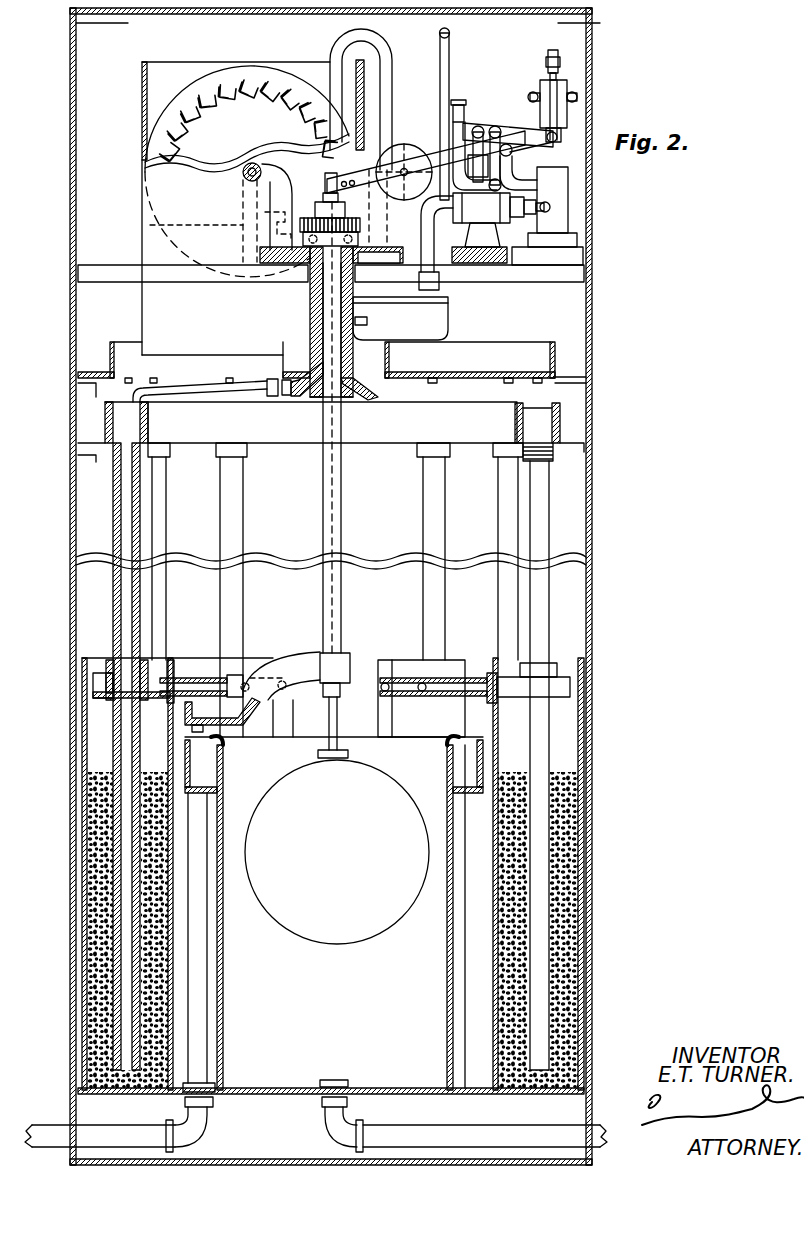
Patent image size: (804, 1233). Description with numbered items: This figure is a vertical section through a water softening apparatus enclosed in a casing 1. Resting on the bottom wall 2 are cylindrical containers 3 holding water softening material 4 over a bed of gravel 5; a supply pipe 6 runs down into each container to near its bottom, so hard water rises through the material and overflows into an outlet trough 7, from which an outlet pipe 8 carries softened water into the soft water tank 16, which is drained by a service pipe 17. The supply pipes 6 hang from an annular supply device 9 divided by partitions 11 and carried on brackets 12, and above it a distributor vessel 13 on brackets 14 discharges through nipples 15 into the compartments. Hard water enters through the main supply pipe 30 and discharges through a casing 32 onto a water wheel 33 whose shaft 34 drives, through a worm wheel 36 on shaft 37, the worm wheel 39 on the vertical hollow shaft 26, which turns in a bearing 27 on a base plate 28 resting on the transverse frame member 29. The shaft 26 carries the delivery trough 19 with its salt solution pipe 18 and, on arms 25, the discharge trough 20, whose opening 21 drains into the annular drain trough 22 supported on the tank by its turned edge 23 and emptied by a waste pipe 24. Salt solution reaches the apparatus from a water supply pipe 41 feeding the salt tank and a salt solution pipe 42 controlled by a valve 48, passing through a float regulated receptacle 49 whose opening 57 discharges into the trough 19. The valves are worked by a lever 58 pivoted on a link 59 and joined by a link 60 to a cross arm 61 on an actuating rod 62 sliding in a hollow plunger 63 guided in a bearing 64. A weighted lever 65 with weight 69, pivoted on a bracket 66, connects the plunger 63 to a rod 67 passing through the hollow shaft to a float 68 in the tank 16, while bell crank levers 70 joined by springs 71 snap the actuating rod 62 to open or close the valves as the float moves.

The casing 1 is at (70, 183).
The bottom wall 2 is at (292, 1094).
The container 3 is at (493, 922).
The water softening material 4 is at (76, 283).
The gravel 5 is at (76, 378).
The supply pipe 6 is at (152, 520).
The outlet trough 7 is at (93, 688).
The outlet pipe 8 is at (187, 678).
The annular supply device 9 is at (562, 425).
The partition 11 is at (520, 425).
The bracket 12 is at (99, 446).
The distributor vessel 13 is at (508, 350).
The bracket 14 is at (561, 372).
The nipple 15 is at (505, 377).
The soft water tank 16 is at (448, 964).
The service pipe 17 is at (382, 1137).
The salt solution pipe 18 is at (190, 395).
The delivery trough 19 is at (370, 385).
The discharge trough 20 is at (245, 728).
The discharge opening 21 is at (195, 728).
The drain trough 22 is at (200, 768).
The turned edge 23 is at (430, 742).
The waste pipe 24 is at (198, 955).
The arm 25 is at (297, 668).
The hollow shaft 26 is at (341, 612).
The bearing 27 is at (311, 272).
The base plate 28 is at (290, 250).
The transverse frame member 29 is at (100, 265).
The main supply pipe 30 is at (380, 78).
The casing 32 is at (142, 90).
The water wheel 33 is at (170, 133).
The shaft 34 is at (243, 172).
The worm wheel 36 is at (243, 208).
The shaft 37 is at (220, 231).
The worm wheel 39 is at (318, 217).
The water supply pipe 41 is at (449, 60).
The salt solution pipe 42 is at (428, 230).
The valve 48 is at (481, 228).
The receptacle 49 is at (430, 312).
The opening 57 is at (374, 311).
The lever 58 is at (520, 128).
The link 59 is at (495, 126).
The link 60 is at (566, 80).
The cross arm 61 is at (562, 64).
The actuating rod 62 is at (536, 50).
The hollow plunger 63 is at (568, 160).
The bearing 64 is at (536, 221).
The lever 65 is at (440, 160).
The bracket 66 is at (575, 184).
The rod 67 is at (326, 178).
The float 68 is at (337, 852).
The weight 69 is at (408, 146).
The bell crank lever 70 is at (566, 112).
The spring 71 is at (565, 94).